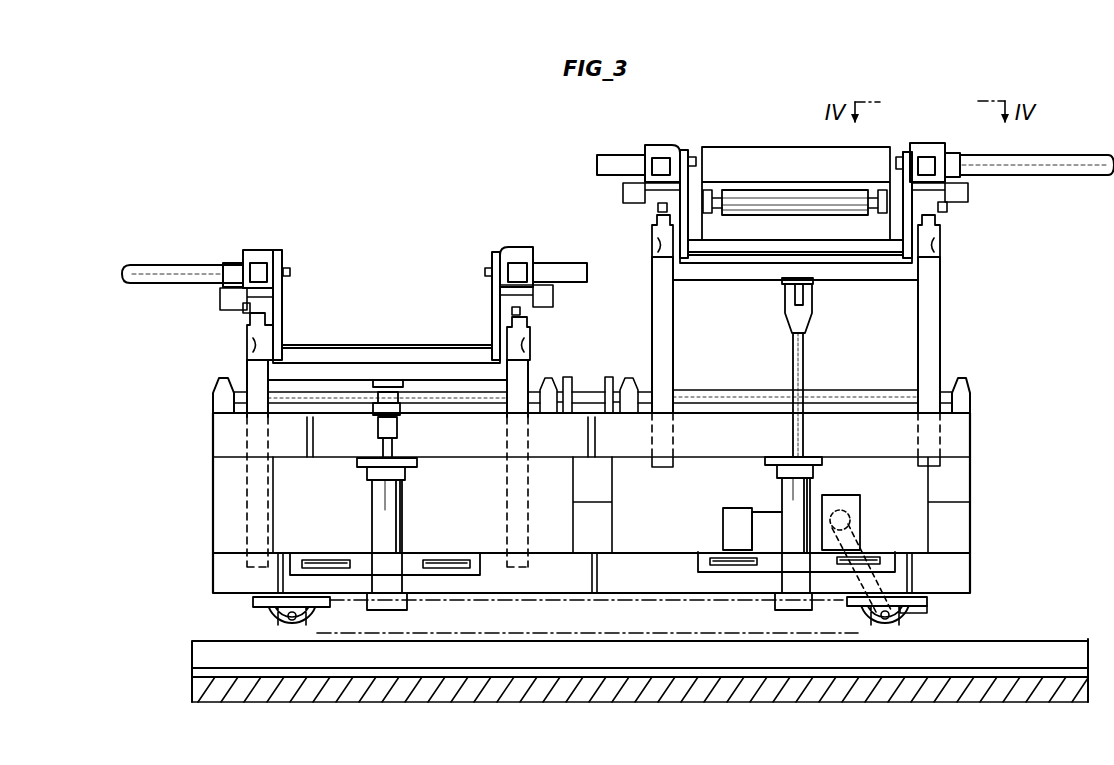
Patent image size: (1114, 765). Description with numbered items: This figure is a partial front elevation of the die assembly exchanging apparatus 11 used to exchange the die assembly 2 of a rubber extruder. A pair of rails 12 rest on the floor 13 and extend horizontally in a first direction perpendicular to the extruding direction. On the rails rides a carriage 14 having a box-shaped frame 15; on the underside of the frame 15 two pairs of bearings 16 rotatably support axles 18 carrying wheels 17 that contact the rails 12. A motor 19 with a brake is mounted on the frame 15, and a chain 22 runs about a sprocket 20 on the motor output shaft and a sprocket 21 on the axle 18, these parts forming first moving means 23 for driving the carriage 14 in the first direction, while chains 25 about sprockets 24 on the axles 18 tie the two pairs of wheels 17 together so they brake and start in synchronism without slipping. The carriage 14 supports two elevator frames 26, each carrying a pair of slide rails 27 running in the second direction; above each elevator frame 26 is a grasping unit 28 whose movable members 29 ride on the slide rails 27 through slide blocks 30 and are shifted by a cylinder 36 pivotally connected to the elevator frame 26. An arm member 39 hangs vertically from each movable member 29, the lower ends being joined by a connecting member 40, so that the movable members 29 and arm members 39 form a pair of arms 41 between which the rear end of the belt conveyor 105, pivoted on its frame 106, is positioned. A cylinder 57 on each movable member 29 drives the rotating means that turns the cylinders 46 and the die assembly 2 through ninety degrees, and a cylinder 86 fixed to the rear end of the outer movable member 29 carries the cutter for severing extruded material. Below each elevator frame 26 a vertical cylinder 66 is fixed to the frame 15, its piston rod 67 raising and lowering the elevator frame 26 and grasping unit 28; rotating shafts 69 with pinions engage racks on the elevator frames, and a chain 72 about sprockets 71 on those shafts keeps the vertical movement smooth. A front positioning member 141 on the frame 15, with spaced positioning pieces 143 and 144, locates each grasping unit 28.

The die assembly 2 is at (795, 169).
The die assembly exchanging apparatus 11 is at (945, 297).
The rails 12 is at (648, 650).
The floor 13 is at (1013, 641).
The carriage 14 is at (622, 485).
The frame 15 is at (965, 470).
The bearings 16 is at (308, 618).
The wheels 17 is at (262, 604).
The axles 18 is at (292, 625).
The motor 19 is at (763, 520).
The sprocket 20 is at (845, 512).
The sprocket 21 is at (910, 622).
The chain 22 is at (868, 545).
The first moving means 23 is at (720, 515).
The sprockets 24 is at (270, 625).
The chains 25 is at (545, 633).
The elevator frame 26 is at (515, 520).
The slide rails 27 is at (250, 330).
The grasping unit 28 is at (618, 229).
The movable members 29 is at (281, 250).
The slide blocks 30 is at (243, 308).
The cylinder 36 is at (258, 262).
The arm member 39 is at (283, 312).
The connecting member 40 is at (390, 345).
The arms 41 is at (292, 270).
The cylinders 46 is at (560, 263).
The cylinder 57 is at (555, 295).
The cylinder 66 is at (402, 510).
The piston rod 67 is at (397, 446).
The rotating shafts 69 is at (735, 390).
The sprockets 71 is at (614, 388).
The chain 72 is at (565, 388).
The cylinder 86 is at (178, 265).
The belt conveyor 105 is at (770, 188).
The frame 106 is at (712, 210).
The front positioning member 141 is at (592, 551).
The positioning piece 143 is at (325, 558).
The positioning piece 144 is at (447, 558).